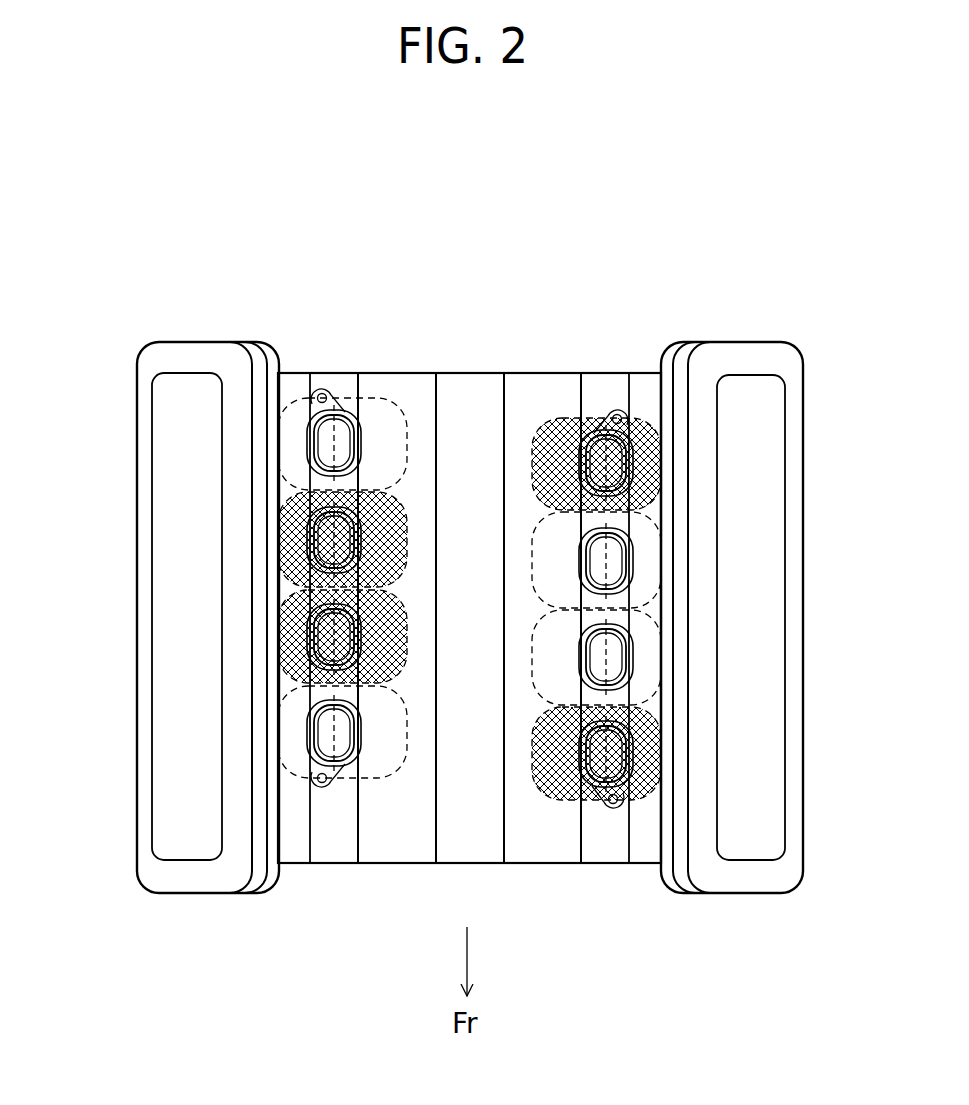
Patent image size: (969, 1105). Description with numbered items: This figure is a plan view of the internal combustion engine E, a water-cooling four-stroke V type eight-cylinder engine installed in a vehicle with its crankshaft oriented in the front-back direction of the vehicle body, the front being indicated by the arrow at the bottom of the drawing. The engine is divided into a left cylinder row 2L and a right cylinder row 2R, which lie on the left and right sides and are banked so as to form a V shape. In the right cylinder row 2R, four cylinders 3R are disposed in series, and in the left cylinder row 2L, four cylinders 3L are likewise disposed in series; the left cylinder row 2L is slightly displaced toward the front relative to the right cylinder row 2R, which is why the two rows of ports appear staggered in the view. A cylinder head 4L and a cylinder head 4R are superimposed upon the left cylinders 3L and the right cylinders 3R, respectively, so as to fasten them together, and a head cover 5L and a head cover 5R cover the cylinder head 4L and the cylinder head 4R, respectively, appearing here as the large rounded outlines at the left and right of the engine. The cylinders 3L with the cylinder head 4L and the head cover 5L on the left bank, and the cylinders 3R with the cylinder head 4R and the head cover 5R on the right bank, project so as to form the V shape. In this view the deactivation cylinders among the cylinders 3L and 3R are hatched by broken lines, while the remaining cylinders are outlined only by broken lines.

The internal combustion engine E is at (473, 348).
The right cylinder row 2R is at (342, 392).
The left cylinder row 2L is at (598, 394).
The right cylinders 3R is at (300, 401).
The left cylinders 3L is at (652, 421).
The right cylinder head 4R is at (313, 866).
The left cylinder head 4L is at (620, 866).
The right head cover 5R is at (174, 818).
The left head cover 5L is at (766, 820).